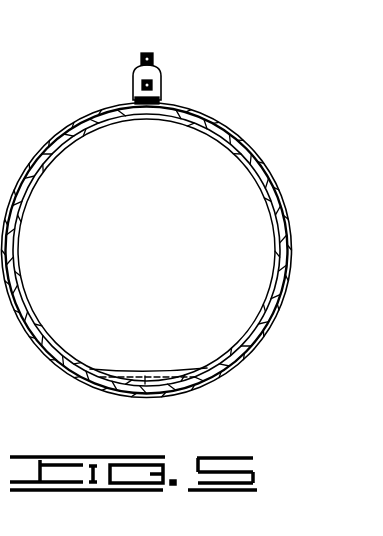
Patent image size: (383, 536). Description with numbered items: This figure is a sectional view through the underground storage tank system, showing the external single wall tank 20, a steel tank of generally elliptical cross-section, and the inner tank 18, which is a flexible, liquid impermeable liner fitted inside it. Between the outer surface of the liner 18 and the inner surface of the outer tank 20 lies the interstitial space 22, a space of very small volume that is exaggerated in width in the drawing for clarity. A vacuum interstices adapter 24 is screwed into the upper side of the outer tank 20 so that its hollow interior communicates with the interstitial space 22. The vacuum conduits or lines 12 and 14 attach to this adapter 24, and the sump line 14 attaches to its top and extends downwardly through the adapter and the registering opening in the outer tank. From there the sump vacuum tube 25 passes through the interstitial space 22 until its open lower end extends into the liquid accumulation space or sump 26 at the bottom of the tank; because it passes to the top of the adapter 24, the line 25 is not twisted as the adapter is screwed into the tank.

The vacuum conduit 12 is at (142, 86).
The sump line 14 is at (143, 53).
The inner tank 18 is at (258, 185).
The external single wall tank 20 is at (280, 185).
The interstitial space 22 is at (25, 330).
The vacuum interstices adapter 24 is at (152, 73).
The sump vacuum tube 25 is at (248, 152).
The sump 26 is at (145, 380).